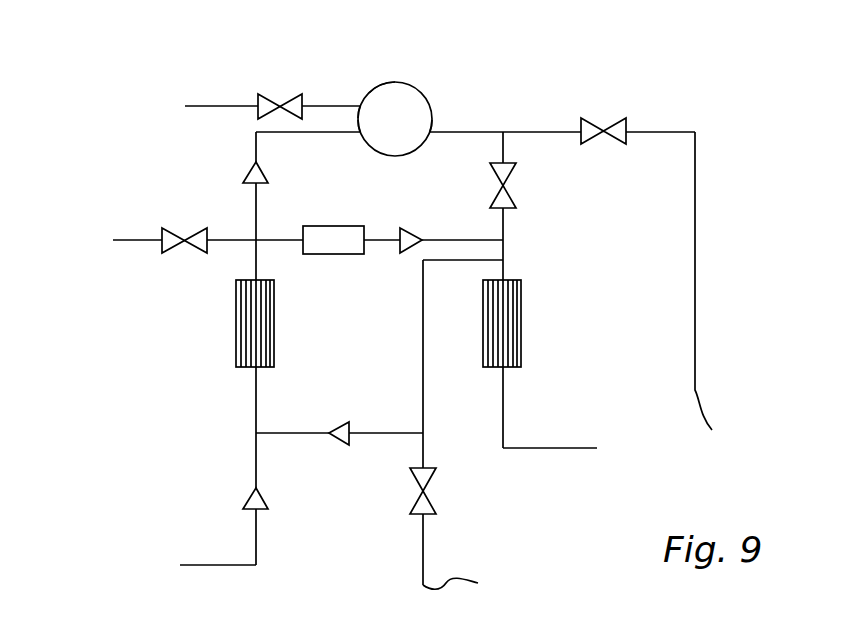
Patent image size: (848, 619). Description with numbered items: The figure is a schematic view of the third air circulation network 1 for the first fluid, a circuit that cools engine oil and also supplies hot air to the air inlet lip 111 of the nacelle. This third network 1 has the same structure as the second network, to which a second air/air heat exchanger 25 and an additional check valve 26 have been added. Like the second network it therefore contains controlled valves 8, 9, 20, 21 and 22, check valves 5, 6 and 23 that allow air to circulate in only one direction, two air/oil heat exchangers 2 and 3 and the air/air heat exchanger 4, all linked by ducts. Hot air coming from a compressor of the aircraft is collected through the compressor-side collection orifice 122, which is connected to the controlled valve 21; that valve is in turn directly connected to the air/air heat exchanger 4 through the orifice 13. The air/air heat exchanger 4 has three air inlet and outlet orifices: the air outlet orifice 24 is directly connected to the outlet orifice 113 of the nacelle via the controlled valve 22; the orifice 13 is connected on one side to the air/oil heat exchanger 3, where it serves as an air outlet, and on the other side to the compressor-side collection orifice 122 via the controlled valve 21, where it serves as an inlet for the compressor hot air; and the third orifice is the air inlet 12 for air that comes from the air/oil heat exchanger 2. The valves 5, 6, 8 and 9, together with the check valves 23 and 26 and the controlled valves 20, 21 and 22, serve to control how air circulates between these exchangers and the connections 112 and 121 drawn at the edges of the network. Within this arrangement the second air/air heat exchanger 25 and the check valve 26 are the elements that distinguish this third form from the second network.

The air circulation network 1 is at (688, 60).
The air/oil heat exchanger 2 is at (235, 336).
The air/oil heat exchanger 3 is at (524, 322).
The air/air heat exchanger 4 is at (418, 85).
The check valve 5 is at (250, 492).
The check valve 6 is at (341, 422).
The controlled valve 8 is at (437, 496).
The controlled valve 9 is at (179, 227).
The air inlet 12 is at (360, 134).
The orifice 13 is at (432, 130).
The controlled valve 20 is at (516, 184).
The controlled valve 21 is at (606, 118).
The controlled valve 22 is at (276, 92).
The check valve 23 is at (250, 171).
The air outlet orifice 24 is at (360, 104).
The second air/air heat exchanger 25 is at (331, 257).
The additional check valve 26 is at (412, 226).
The air inlet lip 111 is at (376, 84).
The inlet line 112 is at (180, 565).
The outlet orifice 113 is at (185, 106).
The outlet line 121 is at (472, 580).
The compressor-side collection orifice 122 is at (725, 288).